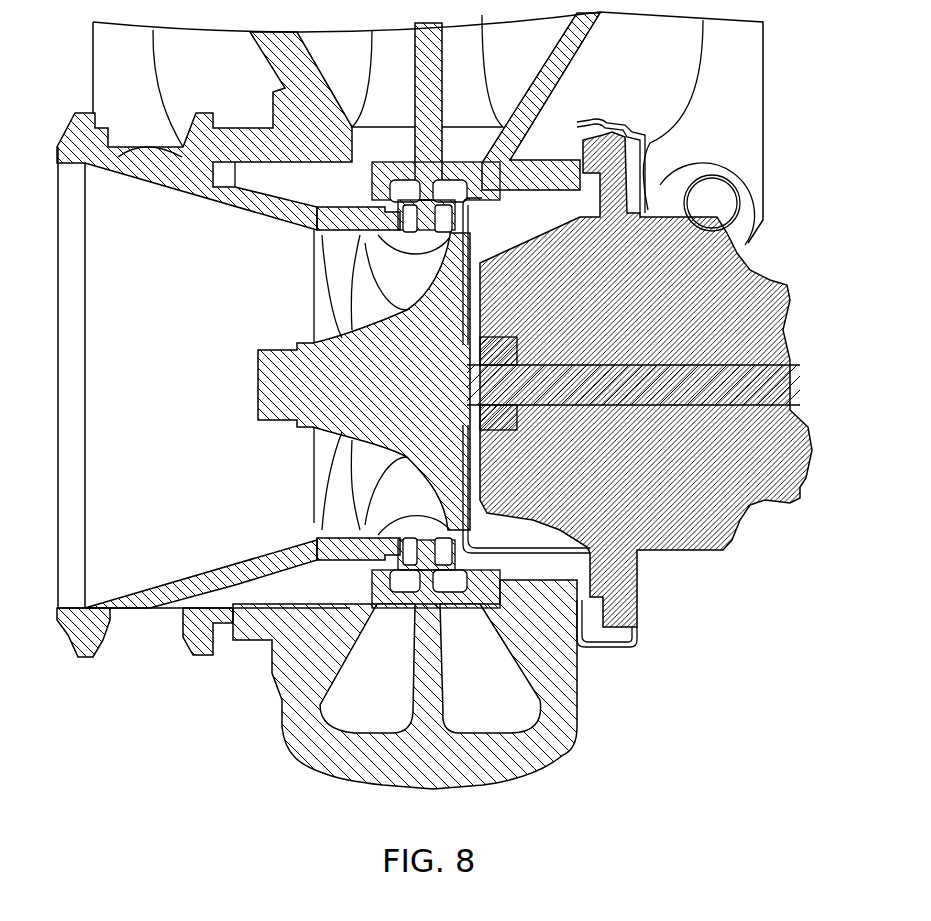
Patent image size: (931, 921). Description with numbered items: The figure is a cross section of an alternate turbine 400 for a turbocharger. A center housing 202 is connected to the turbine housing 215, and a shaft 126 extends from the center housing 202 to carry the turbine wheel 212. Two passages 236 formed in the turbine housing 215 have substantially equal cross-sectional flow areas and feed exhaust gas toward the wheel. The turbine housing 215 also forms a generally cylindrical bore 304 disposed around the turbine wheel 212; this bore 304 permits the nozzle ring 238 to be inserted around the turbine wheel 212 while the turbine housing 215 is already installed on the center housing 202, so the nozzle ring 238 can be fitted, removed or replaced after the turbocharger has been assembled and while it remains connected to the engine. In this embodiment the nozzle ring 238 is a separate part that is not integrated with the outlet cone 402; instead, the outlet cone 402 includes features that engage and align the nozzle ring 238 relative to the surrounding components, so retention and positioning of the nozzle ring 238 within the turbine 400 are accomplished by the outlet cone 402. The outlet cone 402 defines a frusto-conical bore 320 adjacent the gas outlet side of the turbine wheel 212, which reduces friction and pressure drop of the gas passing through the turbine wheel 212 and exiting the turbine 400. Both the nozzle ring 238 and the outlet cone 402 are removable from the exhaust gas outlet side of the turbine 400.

The shaft 126 is at (773, 380).
The center housing 202 is at (657, 540).
The turbine wheel 212 is at (273, 372).
The turbine housing 215 is at (293, 727).
The passages 236 is at (390, 687).
The nozzle ring 238 is at (485, 196).
The bore 304 is at (238, 562).
The frusto-conical bore 320 is at (193, 403).
The turbine 400 is at (790, 143).
The outlet cone 402 is at (75, 548).